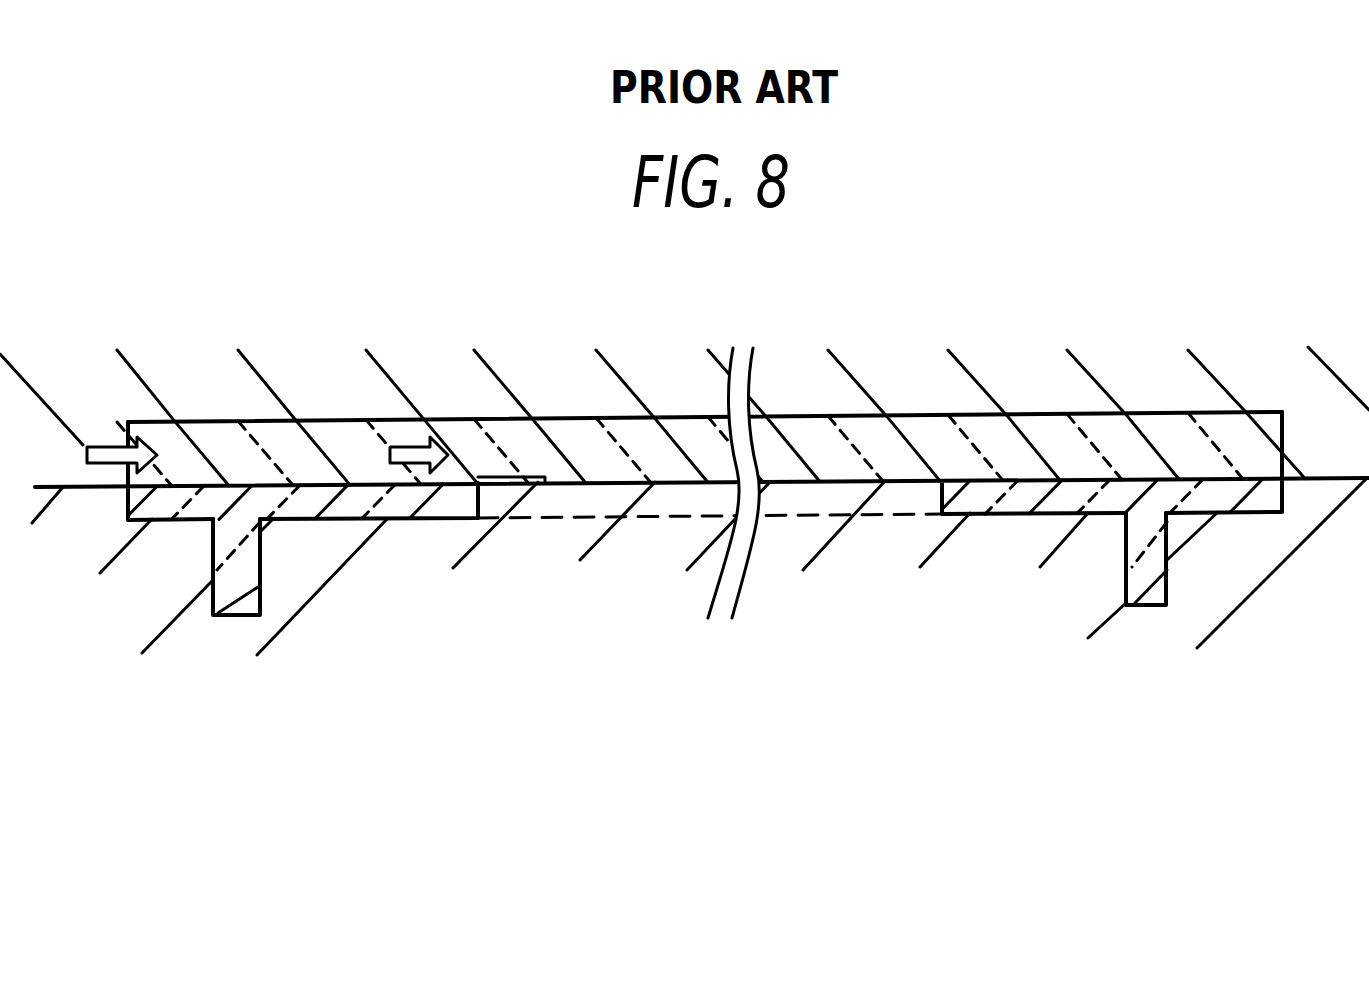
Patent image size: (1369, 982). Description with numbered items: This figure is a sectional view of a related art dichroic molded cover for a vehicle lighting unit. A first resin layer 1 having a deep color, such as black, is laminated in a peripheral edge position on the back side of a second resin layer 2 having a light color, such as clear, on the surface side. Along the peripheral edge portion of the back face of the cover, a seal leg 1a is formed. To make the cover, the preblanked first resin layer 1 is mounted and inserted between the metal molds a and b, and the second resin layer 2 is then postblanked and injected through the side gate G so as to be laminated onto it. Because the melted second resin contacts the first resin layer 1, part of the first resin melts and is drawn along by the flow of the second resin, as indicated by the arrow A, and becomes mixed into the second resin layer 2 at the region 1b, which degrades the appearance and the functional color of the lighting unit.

The first resin layer 1 is at (1255, 513).
The seal leg 1a is at (245, 607).
The mixed-in first resin 1b is at (527, 478).
The second resin layer 2 is at (1234, 433).
The metal mold a is at (308, 352).
The metal mold b is at (380, 595).
The side gate G is at (110, 447).
The arrow A is at (404, 447).